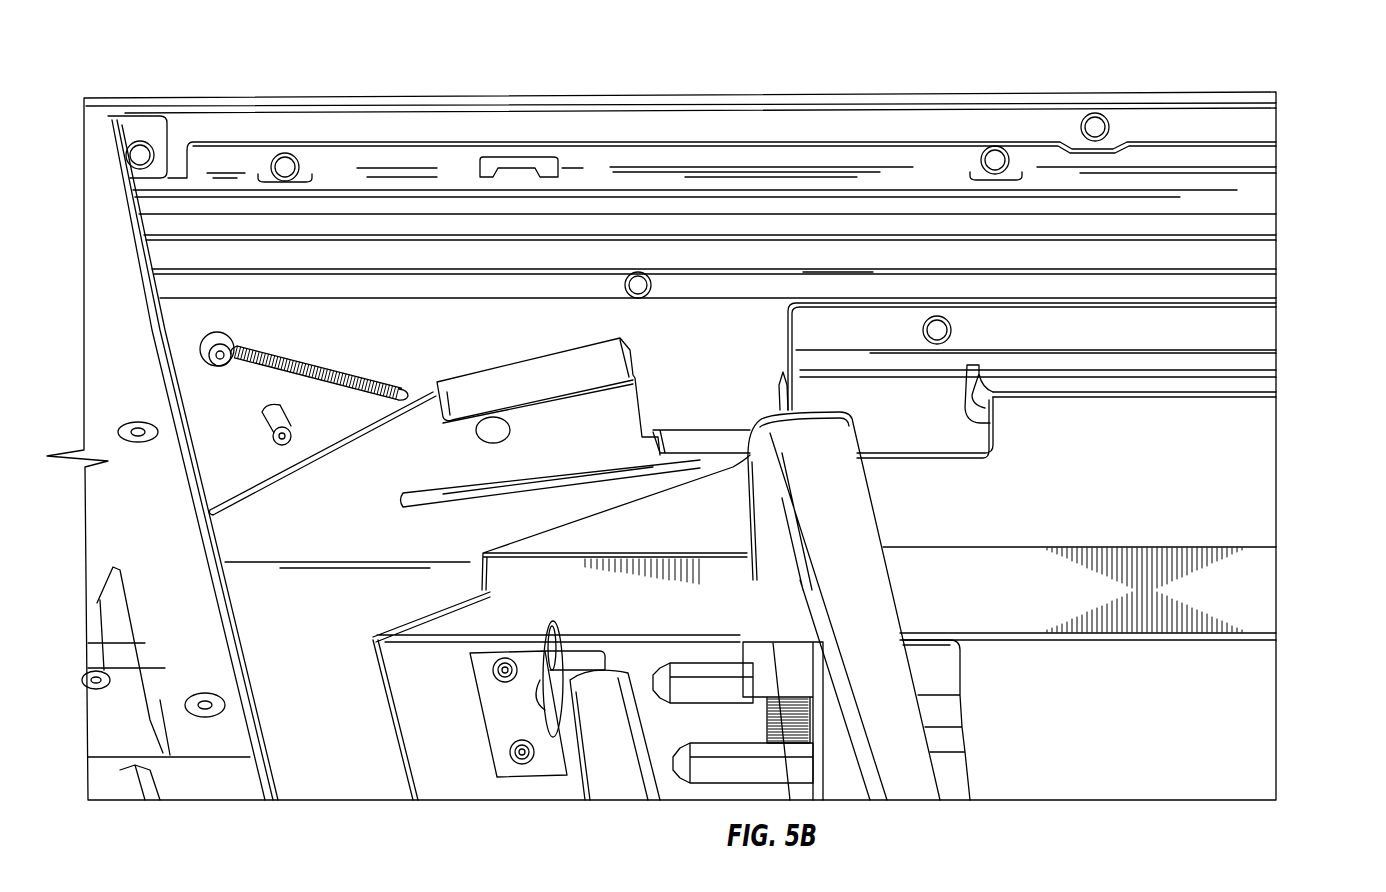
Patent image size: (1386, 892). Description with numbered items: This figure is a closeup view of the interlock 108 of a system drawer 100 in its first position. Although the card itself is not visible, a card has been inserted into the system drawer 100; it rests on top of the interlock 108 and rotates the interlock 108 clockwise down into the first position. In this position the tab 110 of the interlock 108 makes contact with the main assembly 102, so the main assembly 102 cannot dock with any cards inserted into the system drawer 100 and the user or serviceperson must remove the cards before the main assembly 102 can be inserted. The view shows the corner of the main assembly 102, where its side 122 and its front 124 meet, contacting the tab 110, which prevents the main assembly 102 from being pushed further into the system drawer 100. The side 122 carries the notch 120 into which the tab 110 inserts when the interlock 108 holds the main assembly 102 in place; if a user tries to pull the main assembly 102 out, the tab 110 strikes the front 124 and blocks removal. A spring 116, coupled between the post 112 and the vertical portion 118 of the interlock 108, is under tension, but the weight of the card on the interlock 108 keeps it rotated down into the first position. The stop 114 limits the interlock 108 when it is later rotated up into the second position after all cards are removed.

The system drawer 100 is at (1195, 90).
The main assembly 102 is at (1240, 617).
The interlock 108 is at (347, 778).
The tab 110 is at (712, 440).
The post 112 is at (217, 348).
The stop 114 is at (275, 422).
The spring 116 is at (312, 378).
The vertical portion 118 is at (416, 432).
The notch 120 is at (977, 434).
The side 122 is at (1258, 470).
The front 124 is at (900, 777).